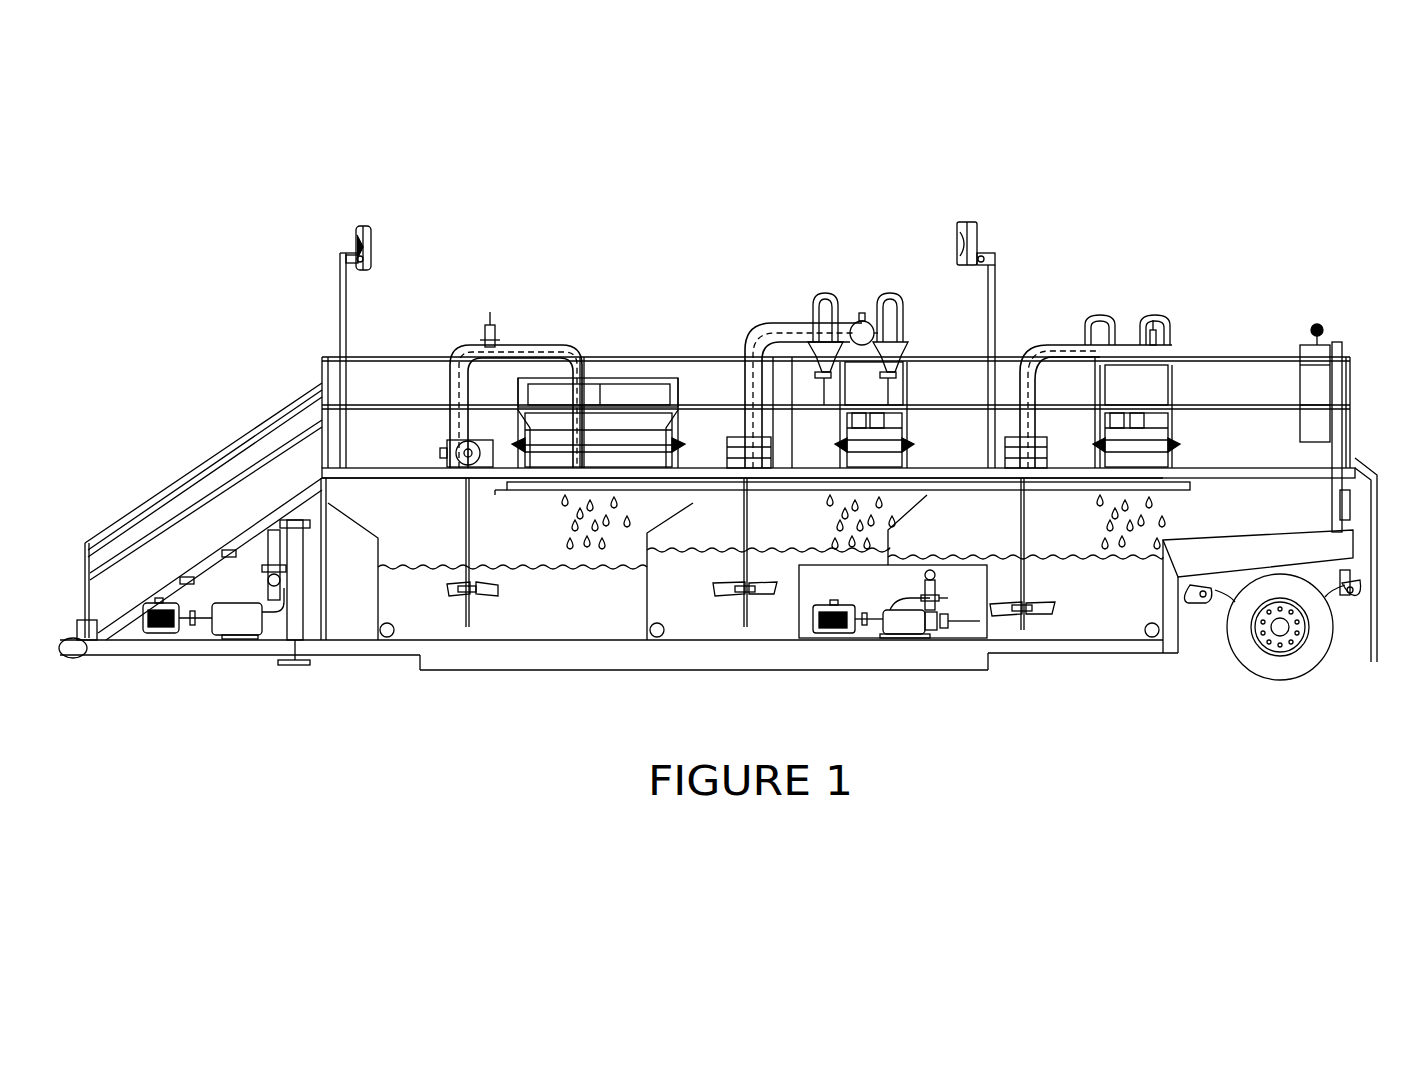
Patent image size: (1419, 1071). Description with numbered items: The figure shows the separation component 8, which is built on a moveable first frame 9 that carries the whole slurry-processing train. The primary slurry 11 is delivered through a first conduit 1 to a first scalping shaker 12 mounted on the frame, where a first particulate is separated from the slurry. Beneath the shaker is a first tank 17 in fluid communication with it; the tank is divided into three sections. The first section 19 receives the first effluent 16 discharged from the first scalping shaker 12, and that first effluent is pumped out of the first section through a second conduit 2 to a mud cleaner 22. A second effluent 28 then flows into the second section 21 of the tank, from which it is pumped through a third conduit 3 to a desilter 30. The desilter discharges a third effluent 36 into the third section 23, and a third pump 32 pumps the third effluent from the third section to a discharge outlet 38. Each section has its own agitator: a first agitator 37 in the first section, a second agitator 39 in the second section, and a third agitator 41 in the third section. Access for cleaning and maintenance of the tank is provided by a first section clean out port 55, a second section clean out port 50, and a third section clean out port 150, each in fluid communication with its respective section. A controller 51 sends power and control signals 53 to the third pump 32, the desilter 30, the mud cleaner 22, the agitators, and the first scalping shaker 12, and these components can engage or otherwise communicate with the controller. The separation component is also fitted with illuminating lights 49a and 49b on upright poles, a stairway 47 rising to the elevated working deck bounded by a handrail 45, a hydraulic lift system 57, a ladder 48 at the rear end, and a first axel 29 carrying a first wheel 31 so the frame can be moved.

The separation component 8 is at (188, 298).
The moveable first frame 9 is at (430, 671).
The first conduit 1 is at (515, 347).
The primary slurry 11 is at (564, 347).
The first scalping shaker 12 is at (632, 385).
The second conduit 2 is at (748, 335).
The first effluent 16 is at (560, 534).
The mud cleaner 22 is at (895, 309).
The third conduit 3 is at (1048, 349).
The second effluent 28 is at (822, 534).
The desilter 30 is at (1160, 318).
The handrail 45 is at (1251, 358).
The controller 51 is at (1304, 348).
The power and control signals 53 is at (1323, 330).
The ladder 48 is at (1368, 475).
The illuminating light 49a is at (358, 228).
The illuminating light 49b is at (975, 225).
The first tank 17 is at (378, 540).
The stairway 47 is at (220, 549).
The hydraulic lift system 57 is at (295, 638).
The first section clean out port 55 is at (393, 637).
The third effluent 36 is at (1095, 534).
The first agitator 37 is at (491, 589).
The second agitator 39 is at (712, 588).
The third agitator 41 is at (1050, 608).
The discharge outlet 38 is at (925, 575).
The first section 19 is at (607, 623).
The second section clean out port 50 is at (660, 638).
The second section 21 is at (686, 622).
The third pump 32 is at (902, 640).
The third section 23 is at (1122, 621).
The third section clean out port 150 is at (1166, 643).
The first wheel 31 is at (1248, 656).
The first axel 29 is at (1285, 634).